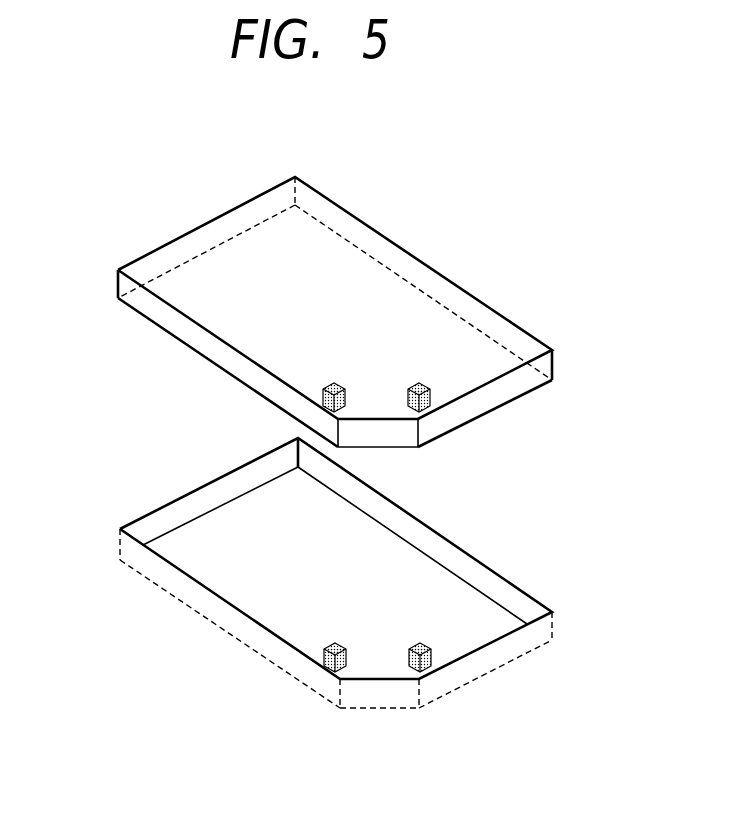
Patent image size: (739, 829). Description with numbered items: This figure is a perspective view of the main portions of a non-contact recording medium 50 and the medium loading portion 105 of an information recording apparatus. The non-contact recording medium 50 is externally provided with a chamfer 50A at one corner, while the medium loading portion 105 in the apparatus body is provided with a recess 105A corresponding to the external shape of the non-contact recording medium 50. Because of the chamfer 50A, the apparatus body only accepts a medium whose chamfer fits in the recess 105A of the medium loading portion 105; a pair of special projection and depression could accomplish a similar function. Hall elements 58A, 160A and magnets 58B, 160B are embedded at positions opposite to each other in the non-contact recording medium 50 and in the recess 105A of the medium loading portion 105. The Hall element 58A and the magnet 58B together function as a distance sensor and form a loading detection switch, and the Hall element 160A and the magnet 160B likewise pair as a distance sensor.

The non-contact recording medium 50 is at (338, 288).
The chamfer 50A is at (383, 440).
The magnet 160B is at (340, 383).
The Hall element 58A is at (425, 388).
The medium loading portion 105 is at (342, 573).
The recess 105A is at (393, 557).
The Hall element 160A is at (325, 662).
The magnet 58B is at (430, 672).